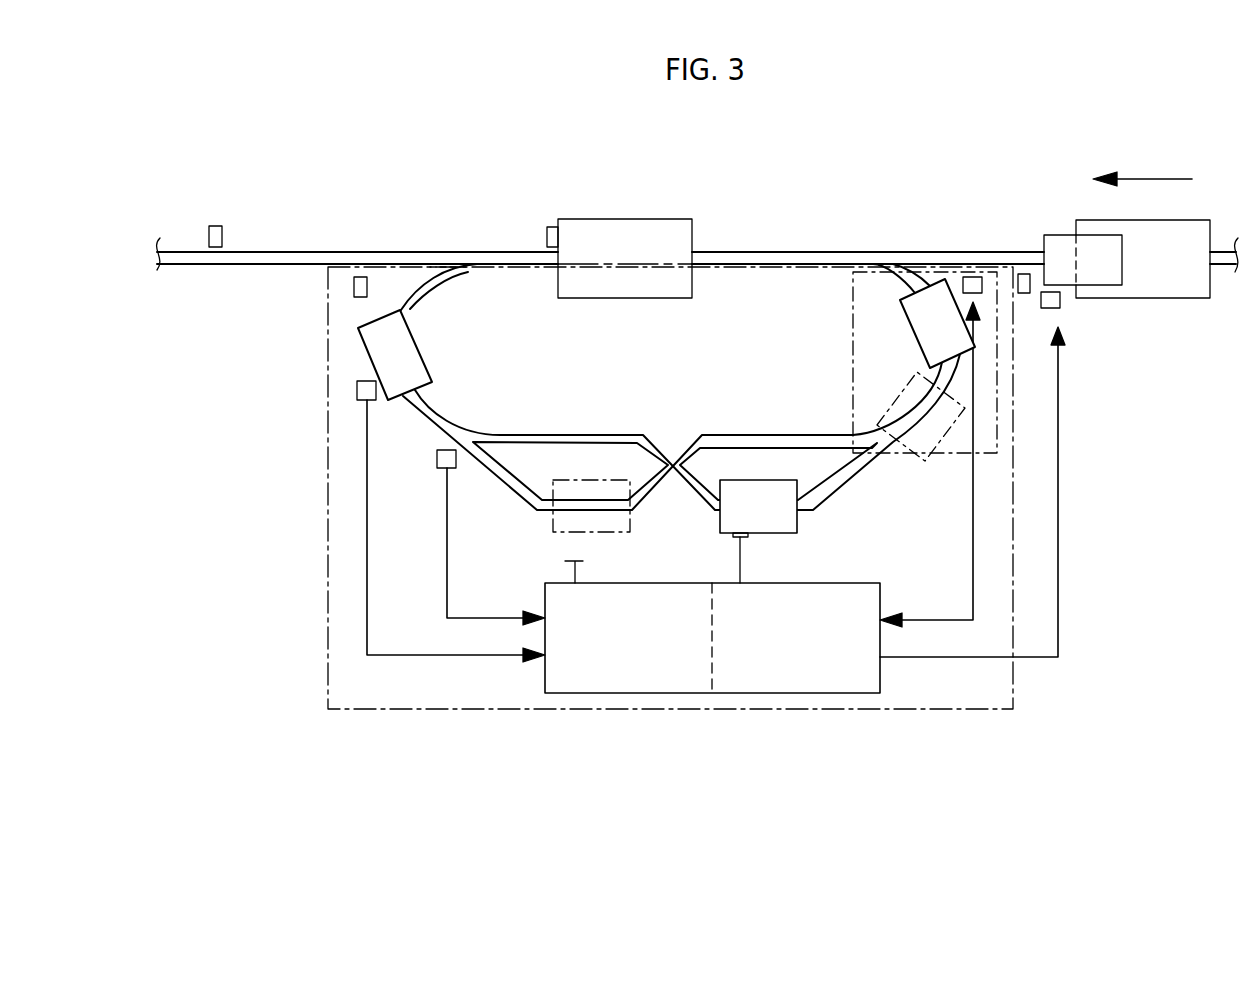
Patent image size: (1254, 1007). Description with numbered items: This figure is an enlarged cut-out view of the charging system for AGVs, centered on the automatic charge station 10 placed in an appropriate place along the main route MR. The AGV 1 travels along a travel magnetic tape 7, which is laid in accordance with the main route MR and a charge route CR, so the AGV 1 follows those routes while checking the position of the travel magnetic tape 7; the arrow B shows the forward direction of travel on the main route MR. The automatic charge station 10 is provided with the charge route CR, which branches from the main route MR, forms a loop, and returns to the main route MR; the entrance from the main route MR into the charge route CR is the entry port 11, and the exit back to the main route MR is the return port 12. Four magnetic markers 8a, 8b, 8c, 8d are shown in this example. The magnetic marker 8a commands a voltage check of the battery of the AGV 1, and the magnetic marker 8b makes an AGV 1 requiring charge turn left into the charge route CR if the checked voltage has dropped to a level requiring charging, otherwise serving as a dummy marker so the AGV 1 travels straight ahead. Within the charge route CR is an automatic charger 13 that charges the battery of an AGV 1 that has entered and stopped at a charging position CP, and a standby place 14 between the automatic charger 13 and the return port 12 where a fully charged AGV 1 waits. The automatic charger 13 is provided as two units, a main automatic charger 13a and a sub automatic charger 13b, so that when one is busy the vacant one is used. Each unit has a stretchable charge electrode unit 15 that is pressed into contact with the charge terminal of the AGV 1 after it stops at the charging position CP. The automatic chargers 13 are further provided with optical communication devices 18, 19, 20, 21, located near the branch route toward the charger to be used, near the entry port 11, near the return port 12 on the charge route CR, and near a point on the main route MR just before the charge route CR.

The AGV 1 is at (413, 350).
The travel magnetic tape 7 is at (186, 255).
The magnetic marker 8a is at (1025, 294).
The magnetic marker 8b is at (550, 227).
The magnetic marker 8c is at (354, 287).
The magnetic marker 8d is at (216, 225).
The automatic charge station 10 is at (345, 467).
The entry port 11 is at (441, 283).
The return port 12 is at (907, 283).
The automatic charger 13 is at (867, 711).
The main automatic charger 13a is at (602, 680).
The sub automatic charger 13b is at (806, 682).
The standby place 14 is at (855, 388).
The charge electrode unit 15 is at (575, 573).
The optical communication device 18 is at (455, 470).
The optical communication device 19 is at (357, 392).
The optical communication device 20 is at (972, 277).
The optical communication device 21 is at (1060, 308).
The main route MR is at (294, 240).
The charge route CR is at (428, 460).
The charging position CP is at (570, 480).
The arrow B is at (1142, 166).